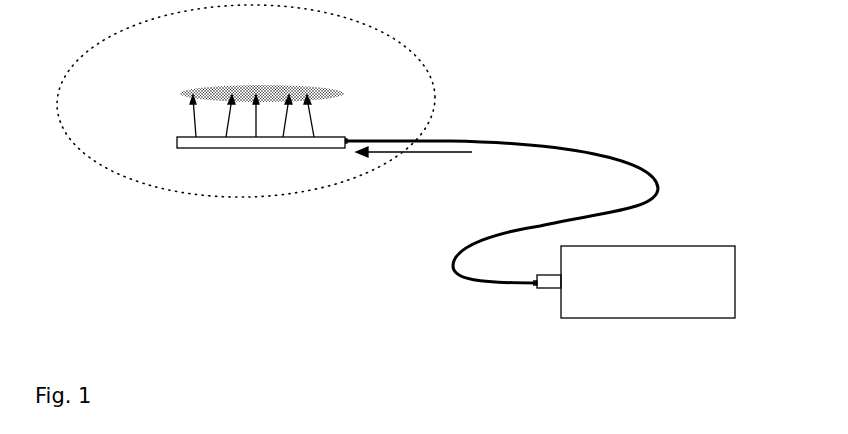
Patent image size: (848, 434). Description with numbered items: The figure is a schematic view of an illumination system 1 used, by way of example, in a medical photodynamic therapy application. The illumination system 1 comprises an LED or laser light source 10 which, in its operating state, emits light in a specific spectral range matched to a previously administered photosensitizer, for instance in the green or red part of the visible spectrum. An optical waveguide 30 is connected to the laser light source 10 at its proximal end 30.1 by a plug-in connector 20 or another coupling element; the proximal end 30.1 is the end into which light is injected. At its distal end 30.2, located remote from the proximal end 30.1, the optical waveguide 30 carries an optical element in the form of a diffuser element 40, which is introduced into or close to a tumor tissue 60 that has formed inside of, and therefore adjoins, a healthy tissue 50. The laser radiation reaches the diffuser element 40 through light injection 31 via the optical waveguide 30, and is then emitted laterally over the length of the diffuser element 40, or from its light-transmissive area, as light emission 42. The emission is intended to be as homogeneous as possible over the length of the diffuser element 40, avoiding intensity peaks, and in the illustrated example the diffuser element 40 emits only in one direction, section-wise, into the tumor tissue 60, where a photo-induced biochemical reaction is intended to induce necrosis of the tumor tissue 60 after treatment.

The illumination system 1 is at (635, 95).
The laser light source 10 is at (685, 260).
The plug-in connector 20 is at (542, 289).
The optical waveguide 30 is at (452, 262).
The proximal end 30.1 is at (533, 288).
The distal end 30.2 is at (348, 143).
The light injection 31 is at (393, 158).
The diffuser element 40 is at (205, 142).
The light emission 42 is at (190, 122).
The healthy tissue 50 is at (412, 95).
The tumor tissue 60 is at (320, 90).